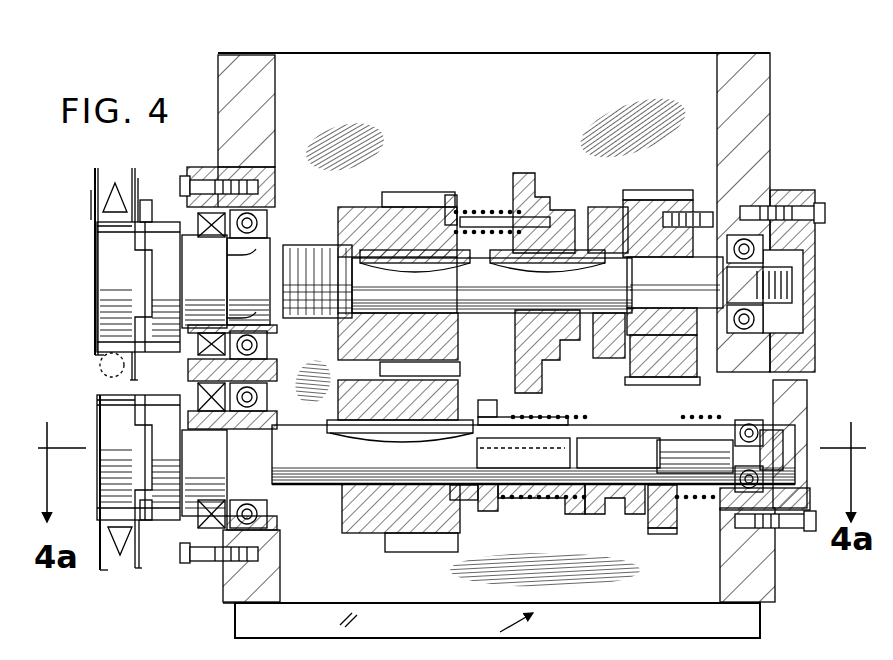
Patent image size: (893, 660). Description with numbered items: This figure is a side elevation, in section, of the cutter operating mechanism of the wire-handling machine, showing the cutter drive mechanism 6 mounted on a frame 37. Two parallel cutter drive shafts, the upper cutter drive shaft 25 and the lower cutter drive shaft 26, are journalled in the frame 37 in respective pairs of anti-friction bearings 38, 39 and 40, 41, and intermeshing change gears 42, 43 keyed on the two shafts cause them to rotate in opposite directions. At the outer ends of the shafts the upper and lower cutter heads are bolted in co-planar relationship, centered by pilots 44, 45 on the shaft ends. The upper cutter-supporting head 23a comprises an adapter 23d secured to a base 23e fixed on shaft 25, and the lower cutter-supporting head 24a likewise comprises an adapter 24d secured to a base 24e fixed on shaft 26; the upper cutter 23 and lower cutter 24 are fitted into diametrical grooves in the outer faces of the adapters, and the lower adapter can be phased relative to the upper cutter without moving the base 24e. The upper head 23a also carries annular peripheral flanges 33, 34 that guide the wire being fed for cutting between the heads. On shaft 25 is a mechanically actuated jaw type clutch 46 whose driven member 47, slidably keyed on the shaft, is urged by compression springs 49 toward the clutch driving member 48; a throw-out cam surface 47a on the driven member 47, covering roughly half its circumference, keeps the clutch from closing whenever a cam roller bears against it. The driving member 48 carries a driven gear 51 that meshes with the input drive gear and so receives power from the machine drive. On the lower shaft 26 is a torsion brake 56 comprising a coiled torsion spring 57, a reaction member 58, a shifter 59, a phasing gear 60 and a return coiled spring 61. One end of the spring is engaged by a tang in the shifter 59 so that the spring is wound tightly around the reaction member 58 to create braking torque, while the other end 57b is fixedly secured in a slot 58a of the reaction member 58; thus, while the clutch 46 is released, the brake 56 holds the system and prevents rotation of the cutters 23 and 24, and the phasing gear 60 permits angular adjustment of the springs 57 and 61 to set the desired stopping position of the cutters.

The cutter drive mechanism 6 is at (527, 78).
The upper cutter 23 is at (108, 188).
The upper cutter-supporting head 23a is at (108, 255).
The upper adapter 23d is at (108, 300).
The upper base 23e is at (156, 232).
The lower cutter 24 is at (104, 558).
The lower cutter-supporting head 24a is at (112, 474).
The lower adapter 24d is at (102, 416).
The lower base 24e is at (168, 512).
The upper cutter drive shaft 25 is at (292, 246).
The lower cutter drive shaft 26 is at (320, 485).
The annular peripheral flange 33 is at (92, 216).
The annular peripheral flange 34 is at (140, 190).
The frame 37 is at (752, 88).
The anti-friction bearing 38 is at (262, 346).
The anti-friction bearing 39 is at (748, 240).
The anti-friction bearing 40 is at (262, 520).
The anti-friction bearing 41 is at (772, 476).
The change gear 42 is at (406, 192).
The change gear 43 is at (434, 551).
The pilot 44 is at (156, 274).
The pilot 45 is at (150, 459).
The jaw type clutch 46 is at (540, 160).
The clutch driven member 47 is at (528, 192).
The throw-out cam surface 47a is at (551, 352).
The clutch driving member 48 is at (604, 208).
The compression spring 49 is at (488, 212).
The driven gear 51 is at (642, 192).
The torsion brake 56 is at (524, 503).
The coiled torsion spring 57 is at (567, 498).
The spring end 57b is at (484, 417).
The reaction member 58 is at (474, 513).
The slot 58a is at (488, 400).
The shifter 59 is at (634, 514).
The phasing gear 60 is at (662, 532).
The return coiled spring 61 is at (698, 503).